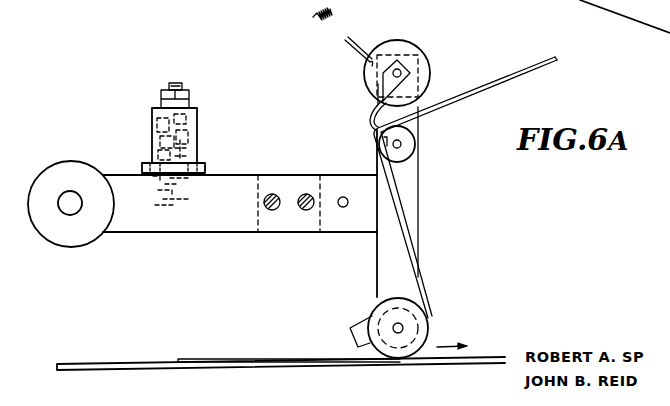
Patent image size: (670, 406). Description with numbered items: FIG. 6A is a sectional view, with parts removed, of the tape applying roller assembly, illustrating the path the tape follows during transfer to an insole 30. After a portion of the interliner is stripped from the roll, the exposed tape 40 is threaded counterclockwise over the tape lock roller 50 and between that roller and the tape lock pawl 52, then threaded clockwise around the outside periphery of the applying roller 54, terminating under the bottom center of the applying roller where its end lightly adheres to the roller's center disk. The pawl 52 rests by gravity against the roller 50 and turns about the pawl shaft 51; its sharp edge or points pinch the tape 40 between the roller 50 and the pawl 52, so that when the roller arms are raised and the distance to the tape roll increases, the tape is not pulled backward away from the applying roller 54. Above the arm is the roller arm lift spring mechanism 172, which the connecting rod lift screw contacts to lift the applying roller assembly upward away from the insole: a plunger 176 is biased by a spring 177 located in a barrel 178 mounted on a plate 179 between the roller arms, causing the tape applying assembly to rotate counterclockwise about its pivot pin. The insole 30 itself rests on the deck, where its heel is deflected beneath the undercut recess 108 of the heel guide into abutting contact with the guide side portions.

The insole 30 is at (118, 365).
The tape 40 is at (480, 83).
The tape lock roller 50 is at (408, 152).
The pawl shaft 51 is at (415, 58).
The tape lock pawl 52 is at (372, 118).
The applying roller 54 is at (443, 322).
The undercut recess 108 is at (567, 2).
The roller arm lift spring mechanism 172 is at (176, 72).
The plunger 176 is at (193, 205).
The spring 177 is at (165, 130).
The barrel 178 is at (198, 133).
The plate 179 is at (205, 168).